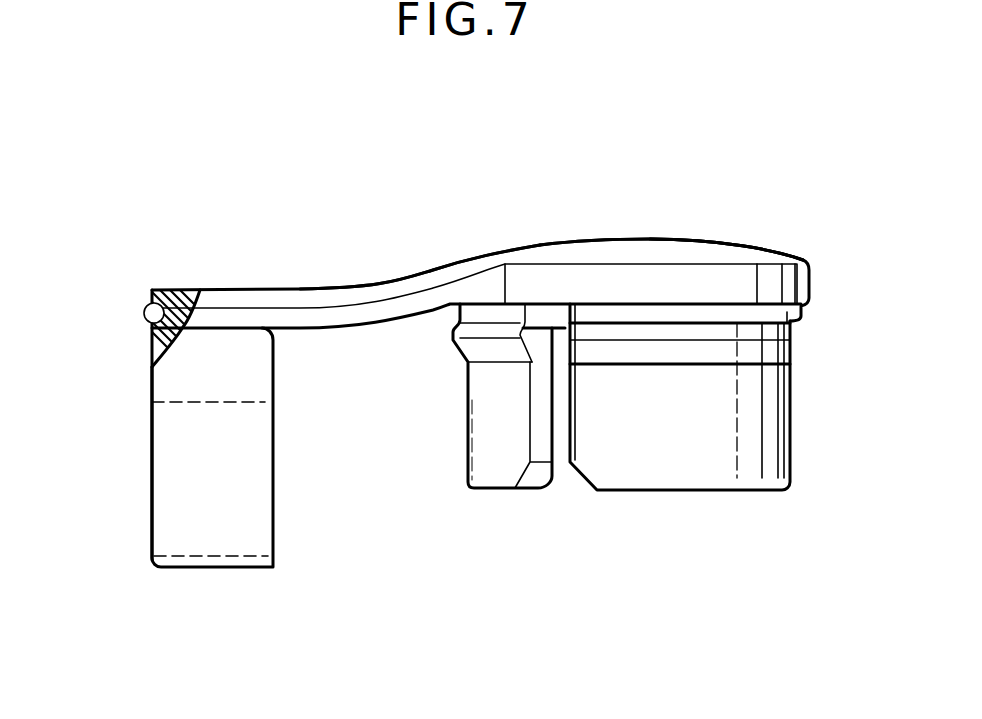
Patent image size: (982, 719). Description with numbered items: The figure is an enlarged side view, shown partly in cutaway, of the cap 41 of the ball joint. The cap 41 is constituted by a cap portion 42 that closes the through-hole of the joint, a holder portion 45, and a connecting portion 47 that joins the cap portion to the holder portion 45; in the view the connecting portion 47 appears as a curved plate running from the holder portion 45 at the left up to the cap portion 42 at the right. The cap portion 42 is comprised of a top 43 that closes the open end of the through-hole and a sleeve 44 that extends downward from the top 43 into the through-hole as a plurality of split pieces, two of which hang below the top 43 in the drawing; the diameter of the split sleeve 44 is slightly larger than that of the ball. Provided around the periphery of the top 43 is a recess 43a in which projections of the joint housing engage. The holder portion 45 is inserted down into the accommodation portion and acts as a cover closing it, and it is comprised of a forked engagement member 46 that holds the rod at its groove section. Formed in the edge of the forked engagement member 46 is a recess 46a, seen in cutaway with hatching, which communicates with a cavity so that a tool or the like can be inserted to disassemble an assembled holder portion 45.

The cap 41 is at (463, 248).
The cap portion 42 is at (708, 250).
The top 43 is at (645, 255).
The recess 43a is at (718, 313).
The sleeve 44 is at (500, 470).
The holder portion 45 is at (149, 387).
The forked engagement member 46 is at (172, 443).
The recess 46a is at (150, 313).
The connecting portion 47 is at (358, 300).